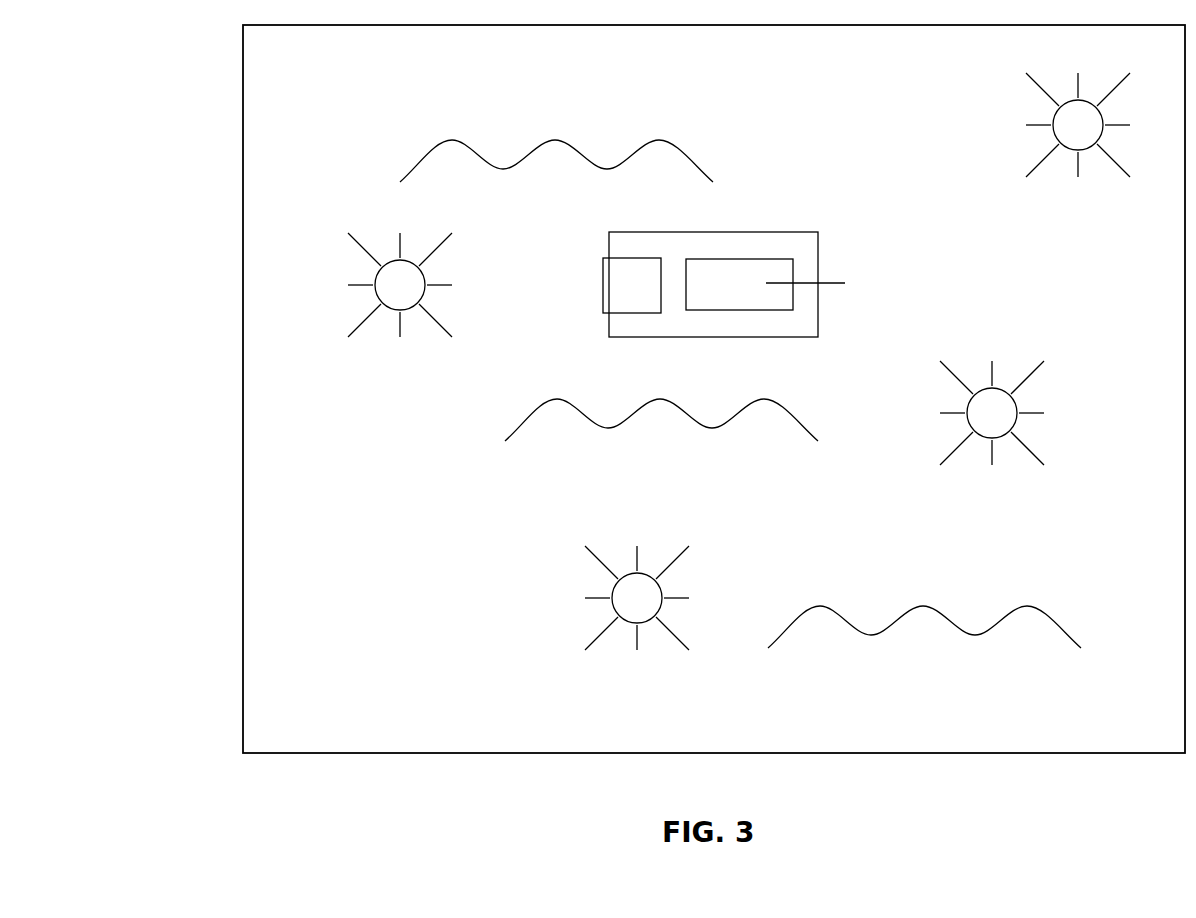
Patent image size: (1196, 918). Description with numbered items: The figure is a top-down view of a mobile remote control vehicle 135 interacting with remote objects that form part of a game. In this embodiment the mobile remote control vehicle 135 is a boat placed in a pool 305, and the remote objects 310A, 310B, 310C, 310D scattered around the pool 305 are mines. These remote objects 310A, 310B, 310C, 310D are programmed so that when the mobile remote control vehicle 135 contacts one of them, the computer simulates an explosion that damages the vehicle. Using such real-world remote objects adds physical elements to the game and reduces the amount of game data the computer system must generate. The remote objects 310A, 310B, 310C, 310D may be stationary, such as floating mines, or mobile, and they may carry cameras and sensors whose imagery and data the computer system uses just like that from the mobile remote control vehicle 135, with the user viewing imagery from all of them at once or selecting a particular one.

The pool 305 is at (243, 67).
The mobile remote control vehicle 135 is at (602, 202).
The remote object 310A is at (374, 285).
The remote object 310B is at (611, 598).
The remote object 310C is at (966, 413).
The remote object 310D is at (1052, 125).